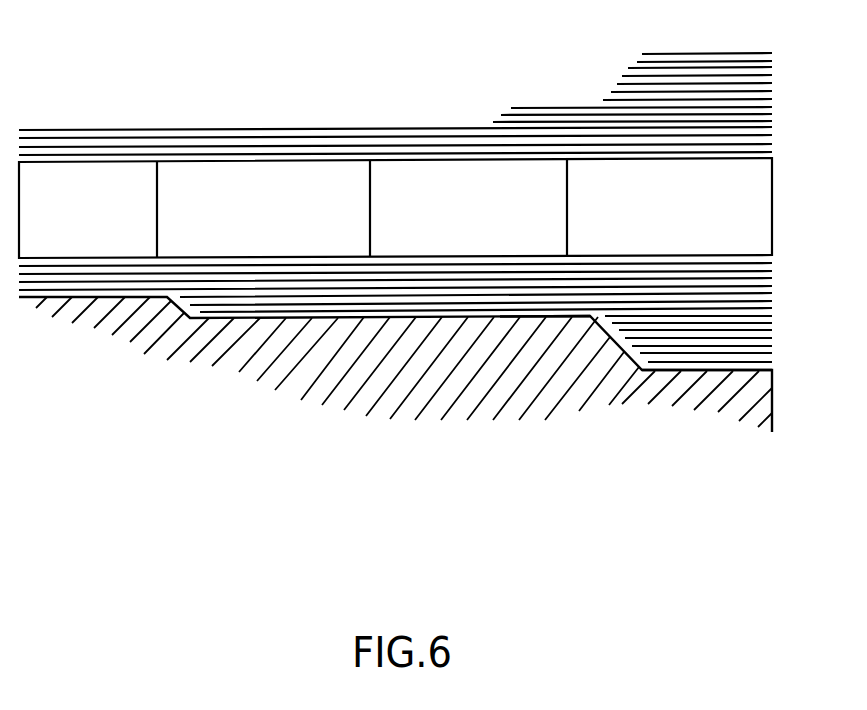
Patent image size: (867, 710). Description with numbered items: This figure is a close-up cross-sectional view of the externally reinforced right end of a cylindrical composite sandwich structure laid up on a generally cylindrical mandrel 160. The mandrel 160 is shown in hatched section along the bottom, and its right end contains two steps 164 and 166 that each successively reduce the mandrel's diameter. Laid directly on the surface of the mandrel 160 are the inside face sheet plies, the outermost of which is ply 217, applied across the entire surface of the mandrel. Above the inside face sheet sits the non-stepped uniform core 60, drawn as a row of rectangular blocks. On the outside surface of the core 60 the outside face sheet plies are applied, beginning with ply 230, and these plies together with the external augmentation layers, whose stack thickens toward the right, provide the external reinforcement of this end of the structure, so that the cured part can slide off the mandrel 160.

The ply 230 is at (772, 152).
The core 60 is at (772, 212).
The ply 217 is at (773, 264).
The mandrel 160 is at (480, 368).
The step 164 is at (565, 317).
The step 166 is at (676, 371).